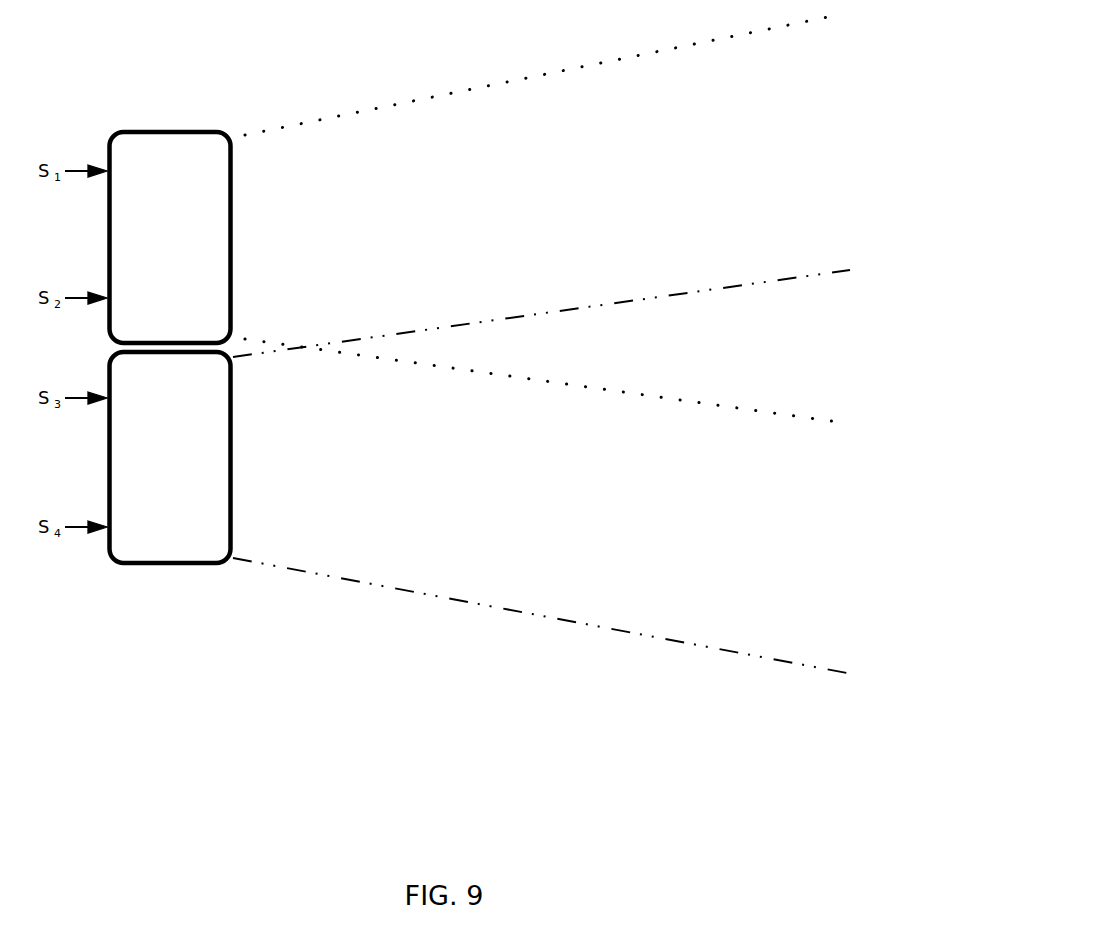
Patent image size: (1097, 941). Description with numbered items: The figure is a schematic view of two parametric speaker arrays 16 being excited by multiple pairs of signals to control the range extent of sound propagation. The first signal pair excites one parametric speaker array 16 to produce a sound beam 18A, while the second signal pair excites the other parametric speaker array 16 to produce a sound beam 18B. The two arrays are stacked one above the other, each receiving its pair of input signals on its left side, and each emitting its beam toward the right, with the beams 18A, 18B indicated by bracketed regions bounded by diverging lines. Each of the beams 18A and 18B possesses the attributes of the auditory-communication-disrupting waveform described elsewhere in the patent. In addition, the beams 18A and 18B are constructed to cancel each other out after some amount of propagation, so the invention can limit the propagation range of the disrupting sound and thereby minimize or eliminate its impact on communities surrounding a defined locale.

The parametric speaker array 16 is at (172, 130).
The sound beam 18A is at (543, 75).
The sound beam 18B is at (740, 285).